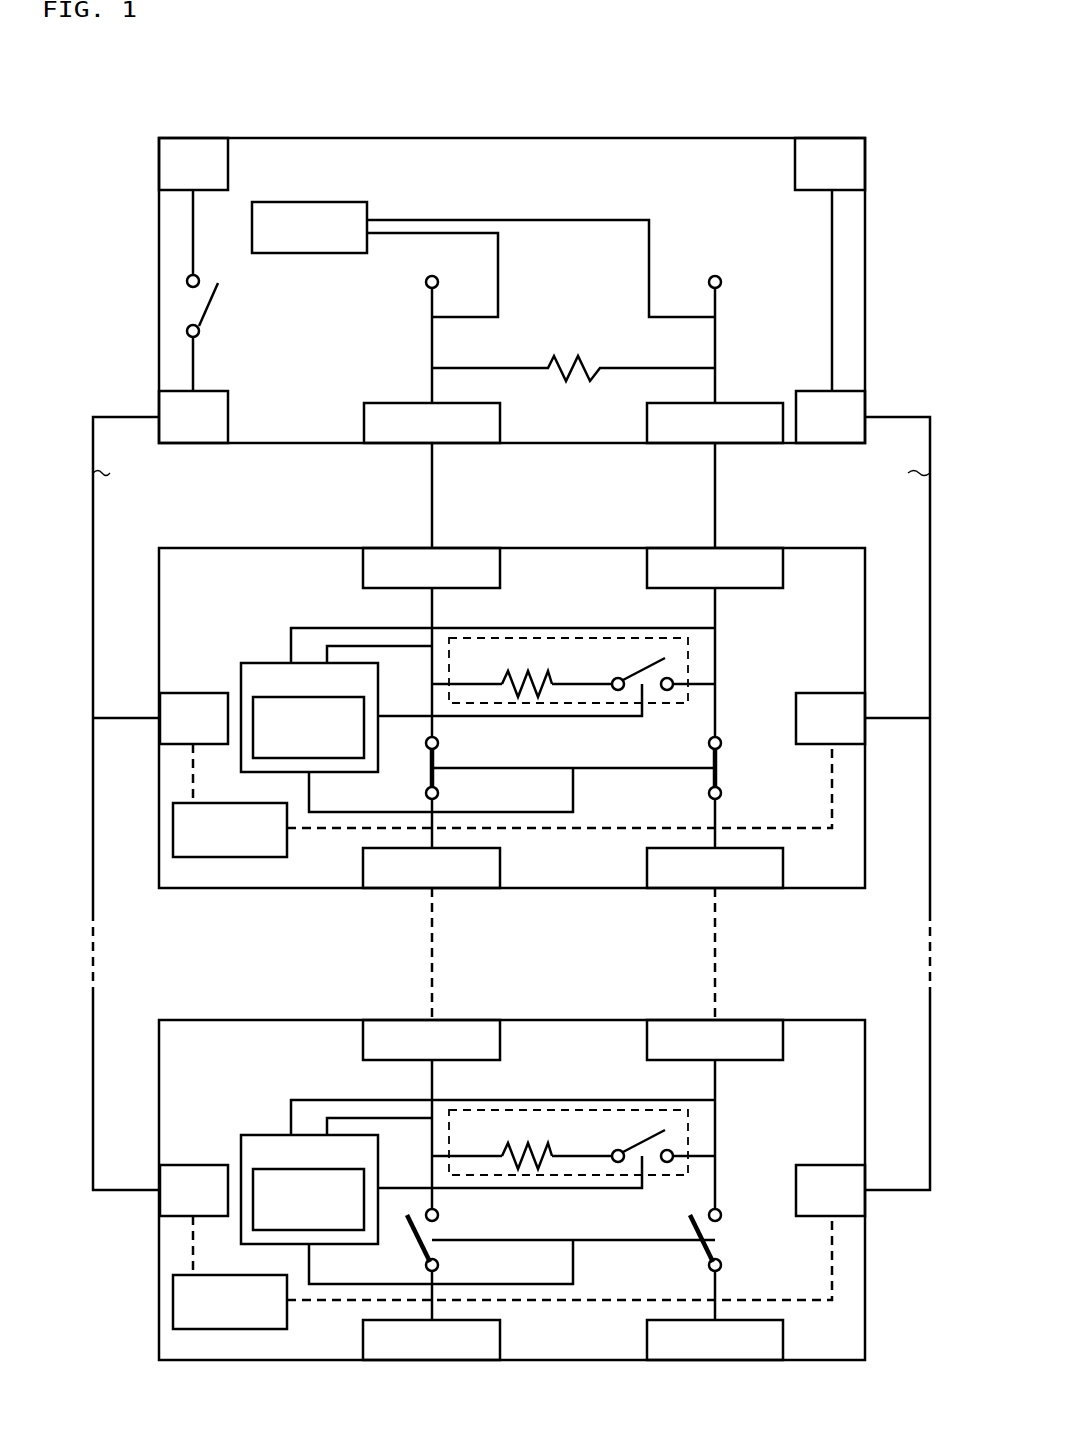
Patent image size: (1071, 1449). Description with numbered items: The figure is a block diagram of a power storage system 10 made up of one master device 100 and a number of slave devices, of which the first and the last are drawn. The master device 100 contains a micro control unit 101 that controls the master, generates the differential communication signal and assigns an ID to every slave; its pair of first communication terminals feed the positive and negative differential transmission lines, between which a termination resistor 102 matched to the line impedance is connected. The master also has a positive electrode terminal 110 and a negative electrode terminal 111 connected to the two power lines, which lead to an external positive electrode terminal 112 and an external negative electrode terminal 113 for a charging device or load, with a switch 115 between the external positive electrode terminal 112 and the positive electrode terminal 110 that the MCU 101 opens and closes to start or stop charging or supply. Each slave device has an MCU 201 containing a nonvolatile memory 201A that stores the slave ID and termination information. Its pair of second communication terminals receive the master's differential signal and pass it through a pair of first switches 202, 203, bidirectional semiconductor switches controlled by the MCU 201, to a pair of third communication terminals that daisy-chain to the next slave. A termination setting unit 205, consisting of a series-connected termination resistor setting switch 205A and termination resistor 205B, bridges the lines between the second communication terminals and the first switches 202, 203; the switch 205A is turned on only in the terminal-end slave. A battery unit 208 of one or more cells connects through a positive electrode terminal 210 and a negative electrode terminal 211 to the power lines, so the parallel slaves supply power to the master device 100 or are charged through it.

The power storage system 10 is at (503, 92).
The master device 100 is at (395, 138).
The micro control unit (MCU) 101 is at (347, 202).
The termination resistor 102 is at (567, 353).
The positive electrode terminal (B+) 110 is at (228, 417).
The negative electrode terminal (B−) 111 is at (806, 391).
The external positive electrode terminal (EB+) 112 is at (228, 165).
The external negative electrode terminal (EB−) 113 is at (795, 165).
The switch 115 is at (208, 305).
The MCU 201 is at (259, 663).
The nonvolatile memory 201A is at (366, 746).
The first switch 202 is at (439, 755).
The first switch 203 is at (722, 755).
The termination setting unit 205 is at (558, 638).
The termination resistor setting switch 205A is at (645, 667).
The termination resistor 205B is at (537, 671).
The battery unit 208 is at (193, 857).
The positive electrode terminal (B+) 210 is at (193, 693).
The negative electrode terminal (B−) 211 is at (830, 693).